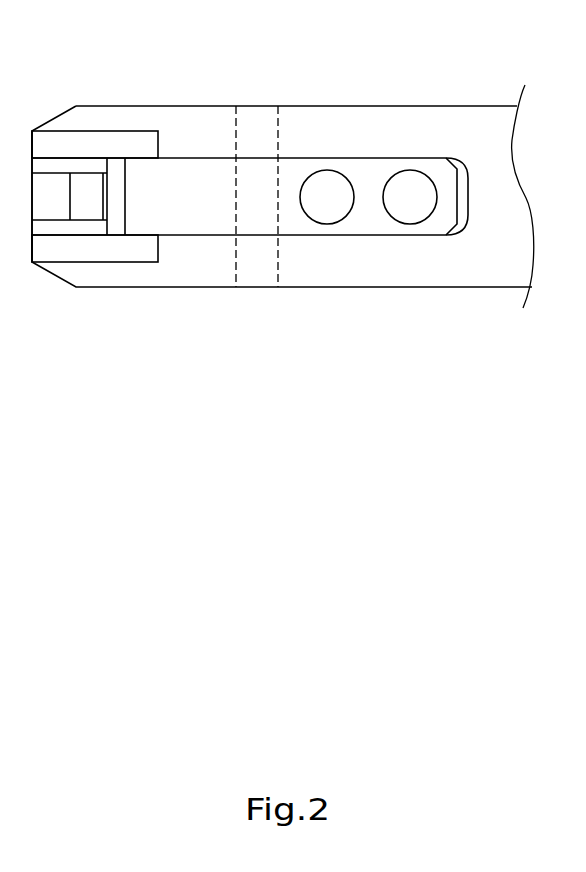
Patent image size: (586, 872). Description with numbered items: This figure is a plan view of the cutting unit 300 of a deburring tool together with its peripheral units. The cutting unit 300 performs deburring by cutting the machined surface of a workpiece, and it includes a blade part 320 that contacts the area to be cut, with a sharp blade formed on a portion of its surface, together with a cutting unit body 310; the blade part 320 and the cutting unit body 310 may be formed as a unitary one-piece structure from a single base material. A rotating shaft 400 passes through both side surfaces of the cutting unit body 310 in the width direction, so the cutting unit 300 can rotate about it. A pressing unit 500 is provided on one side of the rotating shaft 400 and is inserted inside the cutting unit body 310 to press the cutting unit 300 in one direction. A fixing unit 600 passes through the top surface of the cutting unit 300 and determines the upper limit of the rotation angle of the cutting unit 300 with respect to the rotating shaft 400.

The cutting unit 300 is at (157, 48).
The cutting unit body 310 is at (208, 187).
The blade part 320 is at (48, 197).
The rotating shaft 400 is at (235, 135).
The pressing unit 500 is at (327, 197).
The fixing unit 600 is at (408, 197).